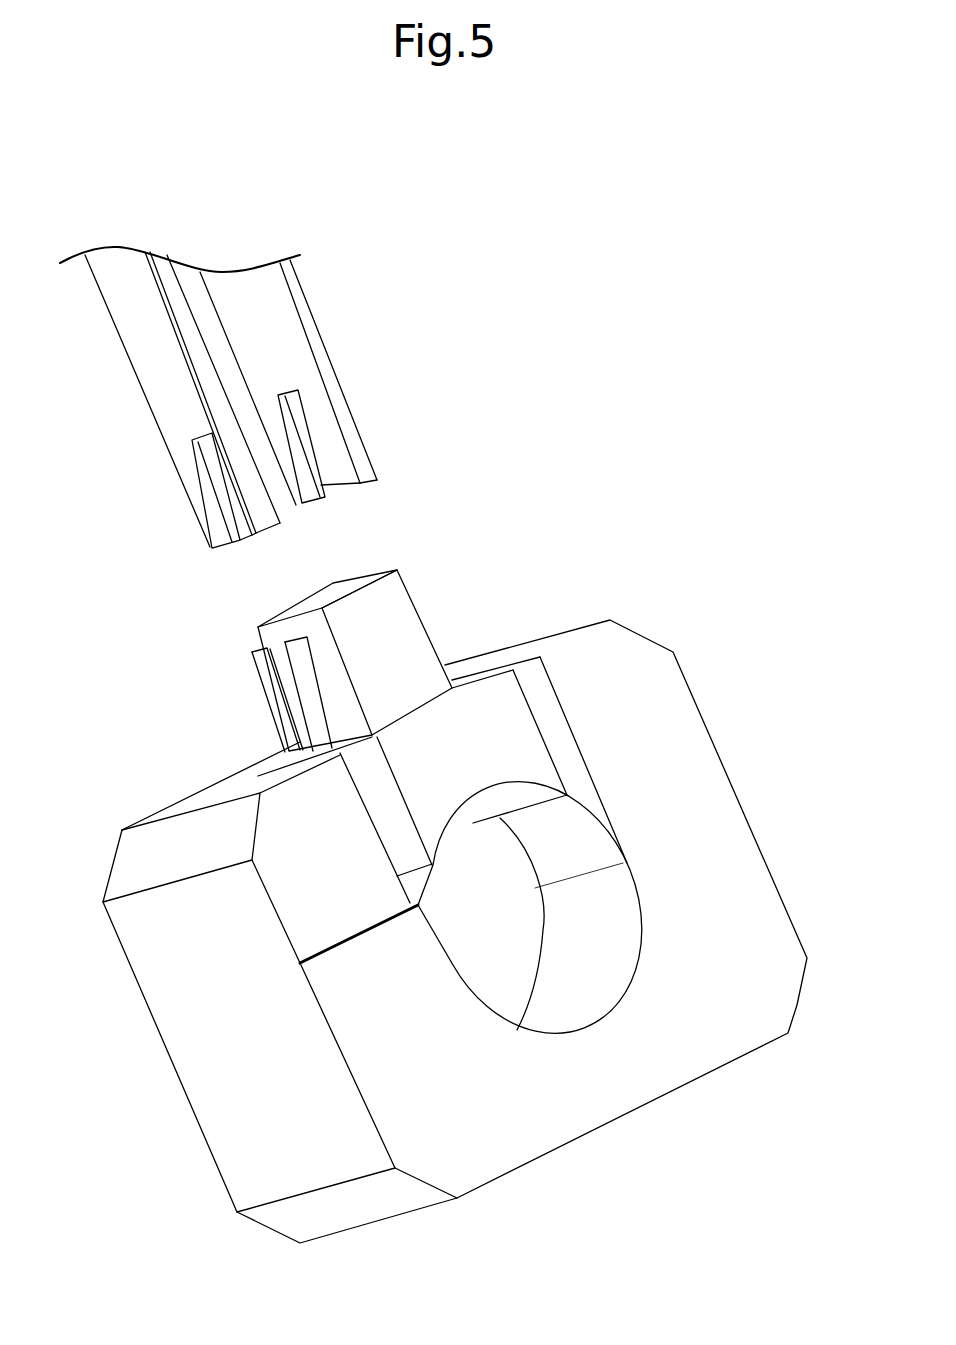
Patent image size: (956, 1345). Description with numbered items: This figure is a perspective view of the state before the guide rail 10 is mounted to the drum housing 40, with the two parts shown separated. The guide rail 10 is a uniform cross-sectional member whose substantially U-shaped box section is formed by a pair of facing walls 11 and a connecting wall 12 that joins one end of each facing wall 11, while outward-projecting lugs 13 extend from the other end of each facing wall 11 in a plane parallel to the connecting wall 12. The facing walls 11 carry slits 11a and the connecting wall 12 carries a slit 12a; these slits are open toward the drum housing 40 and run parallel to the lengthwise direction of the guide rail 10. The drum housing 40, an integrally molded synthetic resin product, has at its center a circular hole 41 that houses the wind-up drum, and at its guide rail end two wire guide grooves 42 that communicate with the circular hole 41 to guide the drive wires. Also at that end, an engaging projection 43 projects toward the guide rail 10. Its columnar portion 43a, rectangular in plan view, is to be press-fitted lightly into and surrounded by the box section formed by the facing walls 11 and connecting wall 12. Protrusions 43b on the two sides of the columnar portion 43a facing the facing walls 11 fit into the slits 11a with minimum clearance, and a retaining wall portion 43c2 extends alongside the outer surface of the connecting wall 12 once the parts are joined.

The guide rail 10 is at (251, 350).
The facing walls 11 is at (283, 356).
The slits 11a is at (332, 480).
The connecting wall 12 is at (218, 342).
The slit 12a is at (253, 528).
The outward-projecting lugs 13 is at (340, 410).
The drum housing 40 is at (448, 881).
The circular hole 41 is at (513, 933).
The wire guide grooves 42 is at (556, 737).
The engaging projection 43 is at (306, 644).
The columnar portion 43a is at (357, 632).
The protrusions 43b is at (295, 680).
The retaining wall portion 43c2 is at (262, 667).